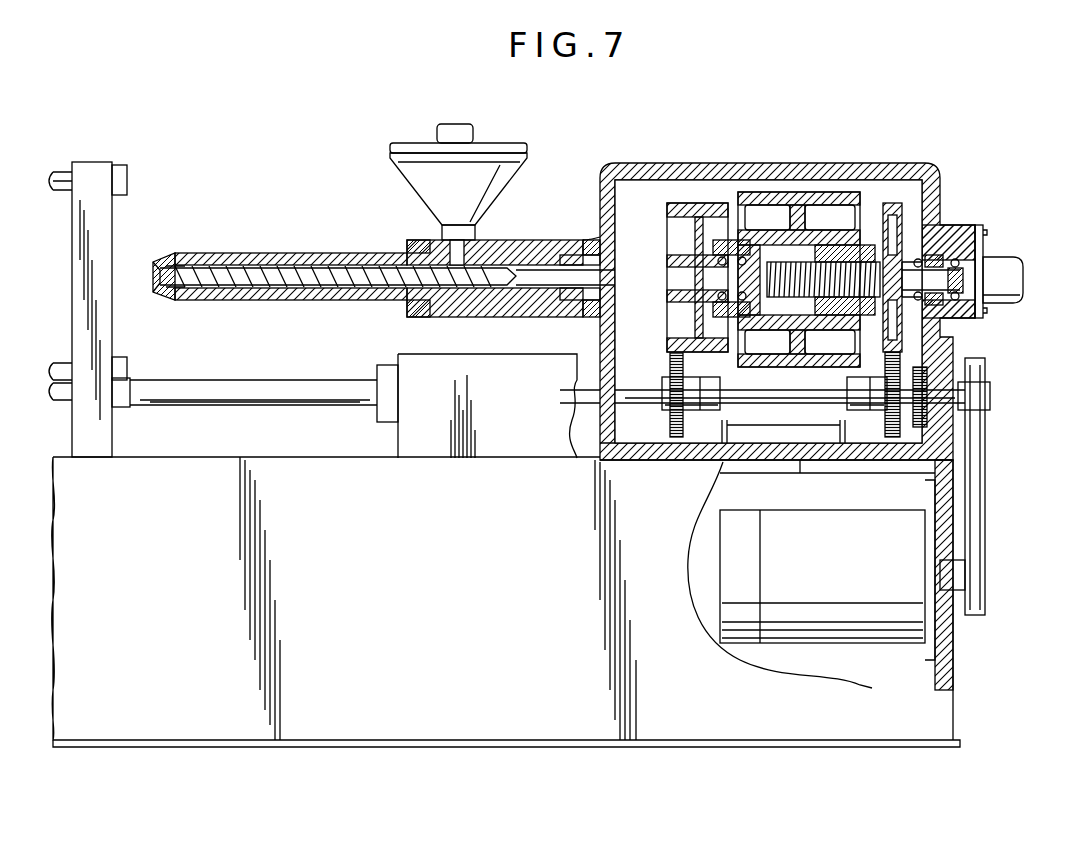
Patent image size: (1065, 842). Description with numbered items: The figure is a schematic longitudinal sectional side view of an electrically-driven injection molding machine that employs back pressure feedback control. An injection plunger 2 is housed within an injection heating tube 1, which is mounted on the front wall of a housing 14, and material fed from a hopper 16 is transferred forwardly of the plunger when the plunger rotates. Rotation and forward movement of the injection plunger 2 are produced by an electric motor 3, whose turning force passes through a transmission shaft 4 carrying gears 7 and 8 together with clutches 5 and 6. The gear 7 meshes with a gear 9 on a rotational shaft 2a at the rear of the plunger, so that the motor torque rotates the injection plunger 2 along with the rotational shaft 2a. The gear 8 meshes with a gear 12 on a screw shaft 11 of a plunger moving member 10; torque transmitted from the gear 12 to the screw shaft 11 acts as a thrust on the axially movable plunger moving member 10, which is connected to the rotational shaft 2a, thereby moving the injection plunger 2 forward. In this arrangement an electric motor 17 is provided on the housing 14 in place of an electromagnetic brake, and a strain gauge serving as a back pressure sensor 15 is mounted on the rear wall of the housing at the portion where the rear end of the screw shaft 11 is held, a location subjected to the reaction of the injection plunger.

The injection heating tube 1 is at (220, 255).
The injection plunger 2 is at (272, 270).
The rotational shaft 2a is at (643, 267).
The electric motor 3 is at (848, 625).
The transmission shaft 4 is at (792, 391).
The clutch 5 is at (718, 390).
The clutch 6 is at (850, 388).
The gear 7 is at (676, 440).
The gear 8 is at (888, 440).
The gear 9 is at (681, 210).
The plunger moving member 10 is at (766, 200).
The screw shaft 11 is at (815, 215).
The gear 12 is at (890, 215).
The housing 14 is at (705, 175).
The back pressure sensor 15 is at (979, 228).
The hopper 16 is at (417, 143).
The electric motor 17 is at (1005, 265).